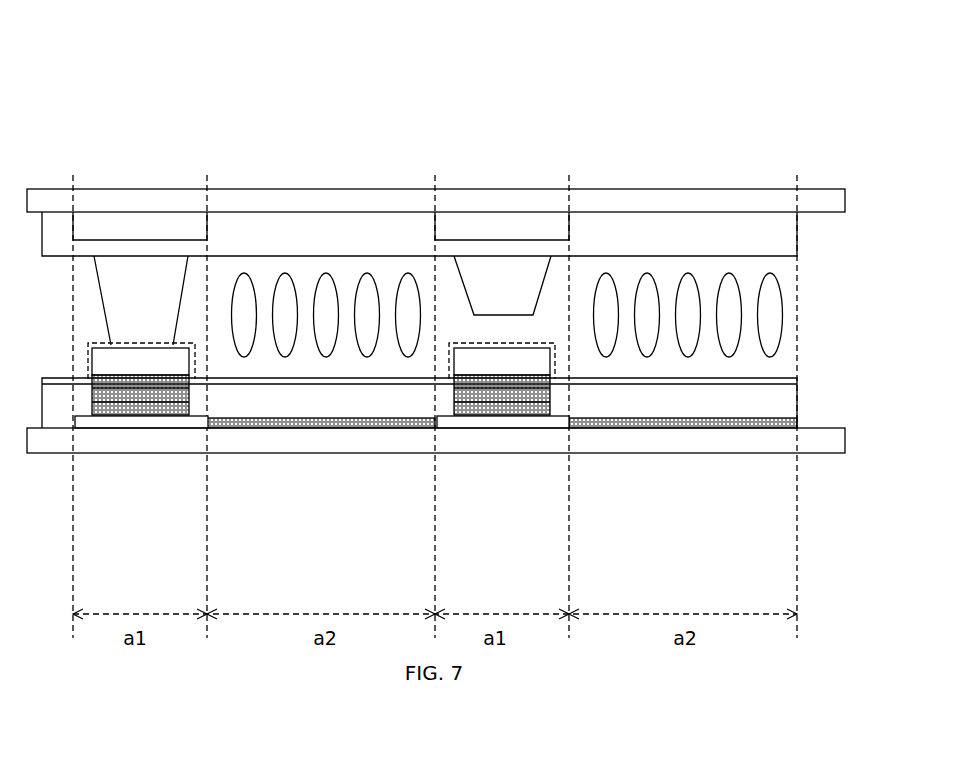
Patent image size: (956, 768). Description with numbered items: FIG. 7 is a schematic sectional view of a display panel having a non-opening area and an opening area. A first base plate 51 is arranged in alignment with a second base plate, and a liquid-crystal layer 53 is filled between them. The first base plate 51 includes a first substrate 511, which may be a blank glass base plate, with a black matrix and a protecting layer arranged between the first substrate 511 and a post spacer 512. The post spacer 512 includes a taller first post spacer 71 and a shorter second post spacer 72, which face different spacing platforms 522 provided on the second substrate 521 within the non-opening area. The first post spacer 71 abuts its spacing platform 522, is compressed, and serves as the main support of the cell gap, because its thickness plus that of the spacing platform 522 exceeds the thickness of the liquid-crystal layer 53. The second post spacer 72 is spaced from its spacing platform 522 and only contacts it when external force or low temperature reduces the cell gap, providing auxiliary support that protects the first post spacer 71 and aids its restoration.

The first base plate 51 is at (188, 65).
The first substrate 511 is at (344, 198).
The post spacer 512 is at (157, 118).
The first post spacer 71 is at (157, 287).
The second post spacer 72 is at (519, 287).
The liquid-crystal layer 53 is at (649, 314).
The second substrate 521 is at (323, 453).
The spacing platform 522 is at (138, 375).